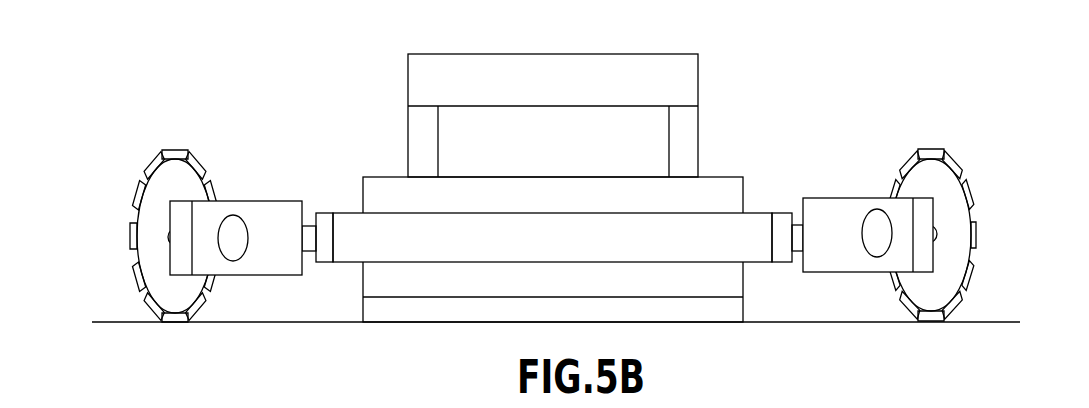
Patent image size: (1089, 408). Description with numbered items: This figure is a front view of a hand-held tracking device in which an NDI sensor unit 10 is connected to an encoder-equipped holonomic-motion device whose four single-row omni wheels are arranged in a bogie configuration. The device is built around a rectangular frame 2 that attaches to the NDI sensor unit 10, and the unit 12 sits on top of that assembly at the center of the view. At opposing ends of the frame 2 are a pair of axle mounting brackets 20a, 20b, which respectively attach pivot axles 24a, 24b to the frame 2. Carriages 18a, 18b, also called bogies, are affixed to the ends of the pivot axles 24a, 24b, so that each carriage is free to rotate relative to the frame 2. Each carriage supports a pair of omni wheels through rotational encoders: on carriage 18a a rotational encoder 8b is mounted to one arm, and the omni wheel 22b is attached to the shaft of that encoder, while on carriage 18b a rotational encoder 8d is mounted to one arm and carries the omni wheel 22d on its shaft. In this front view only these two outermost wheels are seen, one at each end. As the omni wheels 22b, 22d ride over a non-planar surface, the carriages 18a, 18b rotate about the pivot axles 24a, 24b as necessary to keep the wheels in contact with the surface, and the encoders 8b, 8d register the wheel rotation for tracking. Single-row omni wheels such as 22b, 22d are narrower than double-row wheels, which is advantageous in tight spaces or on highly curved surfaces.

The rectangular frame 2 is at (712, 213).
The NDI sensor unit 10 is at (385, 172).
The housing 12 is at (700, 73).
The carriage 18a is at (855, 198).
The carriage 18b is at (255, 200).
The axle mounting bracket 20a is at (780, 263).
The axle mounting bracket 20b is at (327, 263).
The pivot axle 24a is at (799, 220).
The pivot axle 24b is at (308, 223).
The rotational encoder 8b is at (868, 258).
The rotational encoder 8d is at (240, 258).
The omni wheel 22b is at (970, 184).
The omni wheel 22d is at (141, 197).